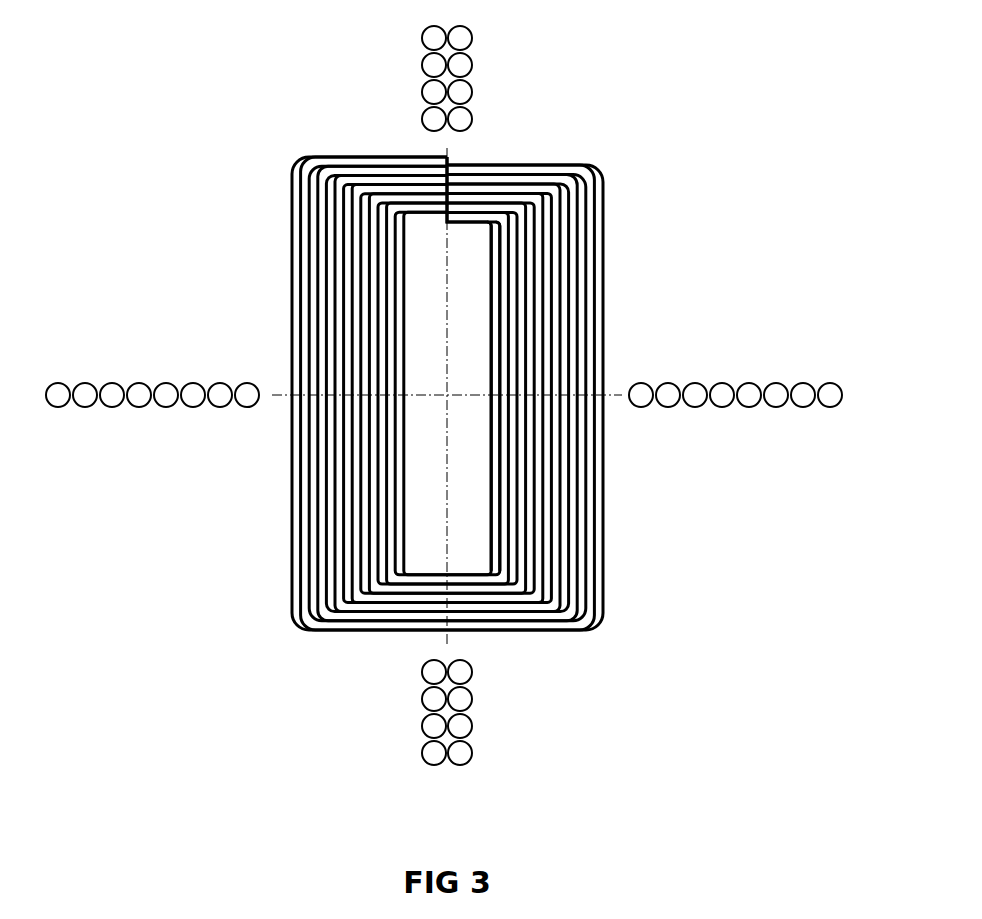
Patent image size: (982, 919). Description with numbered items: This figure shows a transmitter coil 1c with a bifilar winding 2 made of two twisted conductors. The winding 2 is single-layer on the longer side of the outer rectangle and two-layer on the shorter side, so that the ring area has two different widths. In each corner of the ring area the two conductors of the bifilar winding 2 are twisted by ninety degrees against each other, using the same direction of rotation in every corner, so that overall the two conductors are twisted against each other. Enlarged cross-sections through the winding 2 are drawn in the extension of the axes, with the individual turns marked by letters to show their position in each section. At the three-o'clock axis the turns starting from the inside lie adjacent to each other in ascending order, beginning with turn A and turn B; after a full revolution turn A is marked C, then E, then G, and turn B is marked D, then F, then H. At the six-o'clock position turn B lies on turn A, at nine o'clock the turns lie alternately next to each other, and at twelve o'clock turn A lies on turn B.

The transmitter coil 1c is at (444, 395).
The winding 2 is at (290, 207).
The turn A is at (497, 376).
The turn B is at (497, 340).